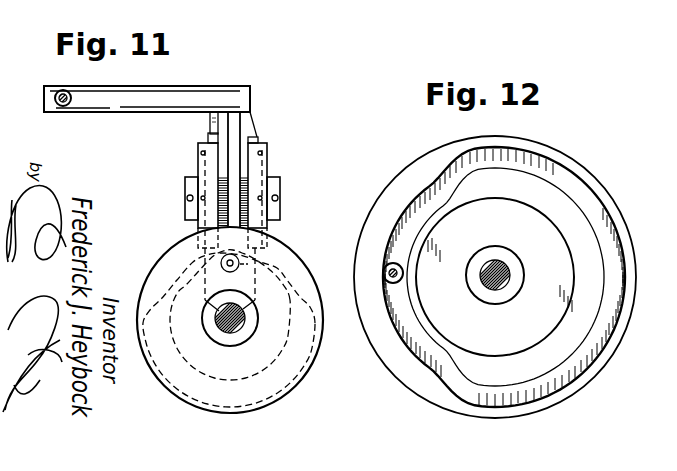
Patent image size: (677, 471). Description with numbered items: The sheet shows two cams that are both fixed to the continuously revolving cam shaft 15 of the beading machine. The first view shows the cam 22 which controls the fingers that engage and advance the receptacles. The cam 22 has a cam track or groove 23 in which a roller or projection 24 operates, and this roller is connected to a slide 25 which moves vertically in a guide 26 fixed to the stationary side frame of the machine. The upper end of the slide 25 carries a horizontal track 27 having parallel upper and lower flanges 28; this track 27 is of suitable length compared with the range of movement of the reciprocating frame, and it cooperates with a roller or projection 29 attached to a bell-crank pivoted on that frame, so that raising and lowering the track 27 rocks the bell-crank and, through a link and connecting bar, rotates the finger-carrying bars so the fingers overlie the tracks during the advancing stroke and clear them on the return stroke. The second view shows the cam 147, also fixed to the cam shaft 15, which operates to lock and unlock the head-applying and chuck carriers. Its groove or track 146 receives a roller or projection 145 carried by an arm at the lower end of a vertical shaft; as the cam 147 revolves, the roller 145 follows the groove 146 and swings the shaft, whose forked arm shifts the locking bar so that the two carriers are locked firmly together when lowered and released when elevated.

In FIG. 11, the cam shaft 15 is at (233, 333).
In FIG. 12, the cam shaft 15 is at (497, 292).
In FIG. 11, the cam 22 is at (306, 268).
In FIG. 11, the cam track or groove 23 is at (243, 265).
In FIG. 11, the roller or projection 24 is at (251, 262).
In FIG. 11, the slide 25 is at (235, 140).
In FIG. 11, the guide 26 is at (260, 171).
In FIG. 11, the track 27 is at (176, 98).
In FIG. 11, the flanges 28 is at (211, 110).
In FIG. 11, the roller or projection 29 is at (66, 106).
In FIG. 12, the roller or projection 145 is at (384, 285).
In FIG. 12, the groove or track 146 is at (543, 166).
In FIG. 12, the cam 147 is at (612, 200).